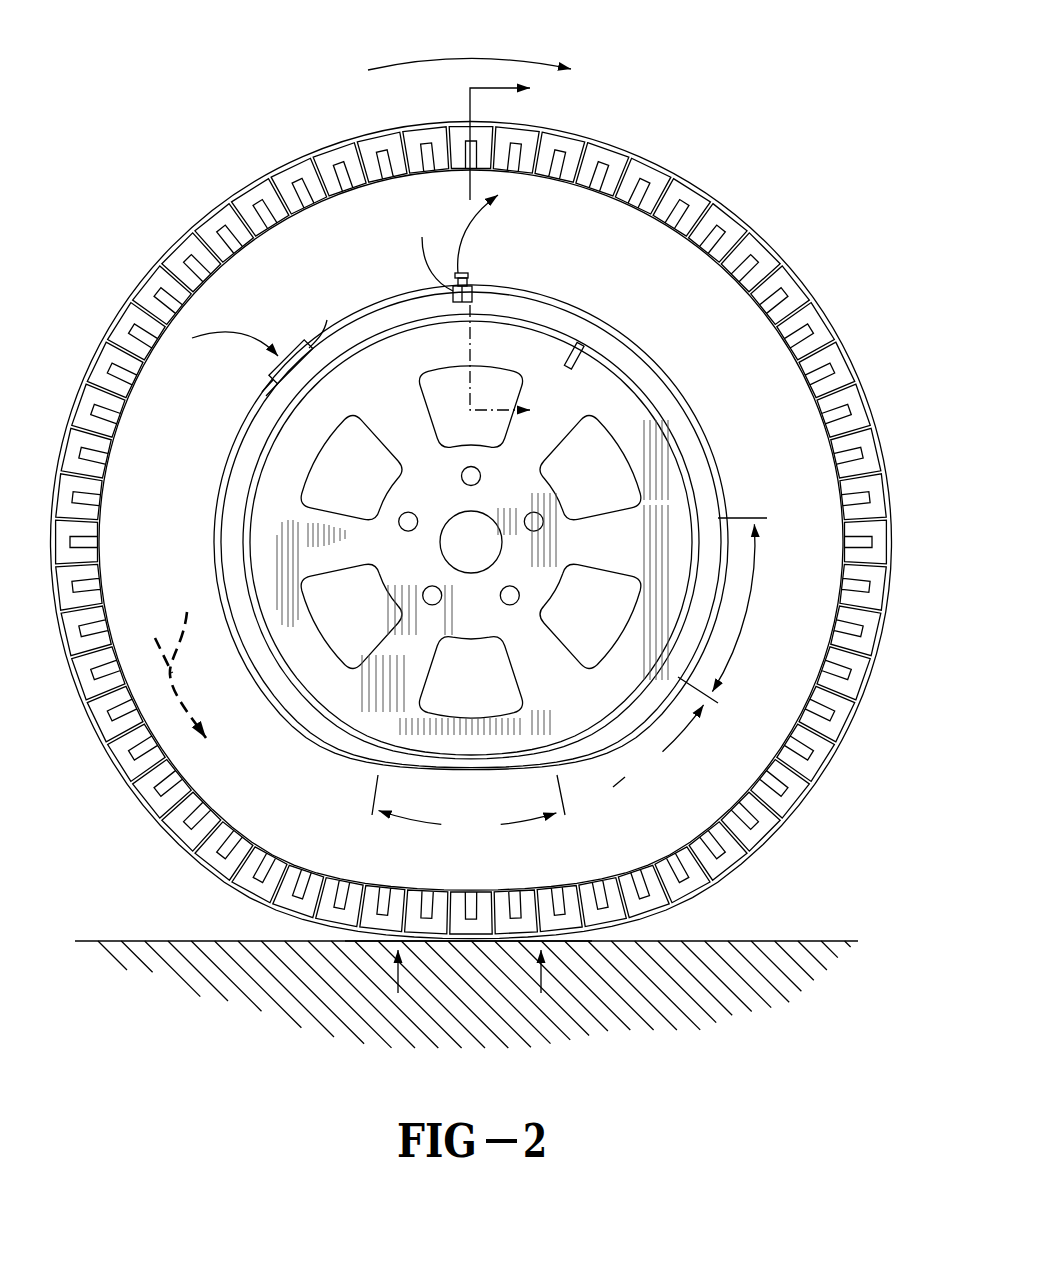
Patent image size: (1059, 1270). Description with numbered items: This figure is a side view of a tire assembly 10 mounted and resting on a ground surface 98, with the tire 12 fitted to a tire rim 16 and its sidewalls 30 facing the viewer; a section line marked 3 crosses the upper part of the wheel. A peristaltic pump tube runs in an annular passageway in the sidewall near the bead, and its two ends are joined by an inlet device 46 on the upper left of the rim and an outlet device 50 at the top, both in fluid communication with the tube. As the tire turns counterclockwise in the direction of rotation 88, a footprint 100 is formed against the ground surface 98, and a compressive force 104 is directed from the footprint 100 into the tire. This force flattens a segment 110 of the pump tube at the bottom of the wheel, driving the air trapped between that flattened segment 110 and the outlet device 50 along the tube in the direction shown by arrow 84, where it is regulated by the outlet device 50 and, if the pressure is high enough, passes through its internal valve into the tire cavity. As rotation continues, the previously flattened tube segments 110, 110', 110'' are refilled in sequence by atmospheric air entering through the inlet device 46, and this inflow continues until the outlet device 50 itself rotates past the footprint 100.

The tire assembly 10 is at (140, 142).
The tire 12 is at (663, 264).
The tire rim 16 is at (408, 498).
The sidewalls 30 is at (728, 355).
The inlet device 46 is at (272, 371).
The outlet device 50 is at (476, 287).
The arrow 84 is at (180, 663).
The direction of rotation 88 is at (372, 62).
The ground surface 98 is at (745, 940).
The footprint 100 is at (490, 945).
The compressive force 104 is at (393, 982).
The segment 110 is at (468, 807).
The tube segment 110' is at (658, 746).
The tube segment 110'' is at (728, 610).
The section line 3- 3 is at (519, 253).